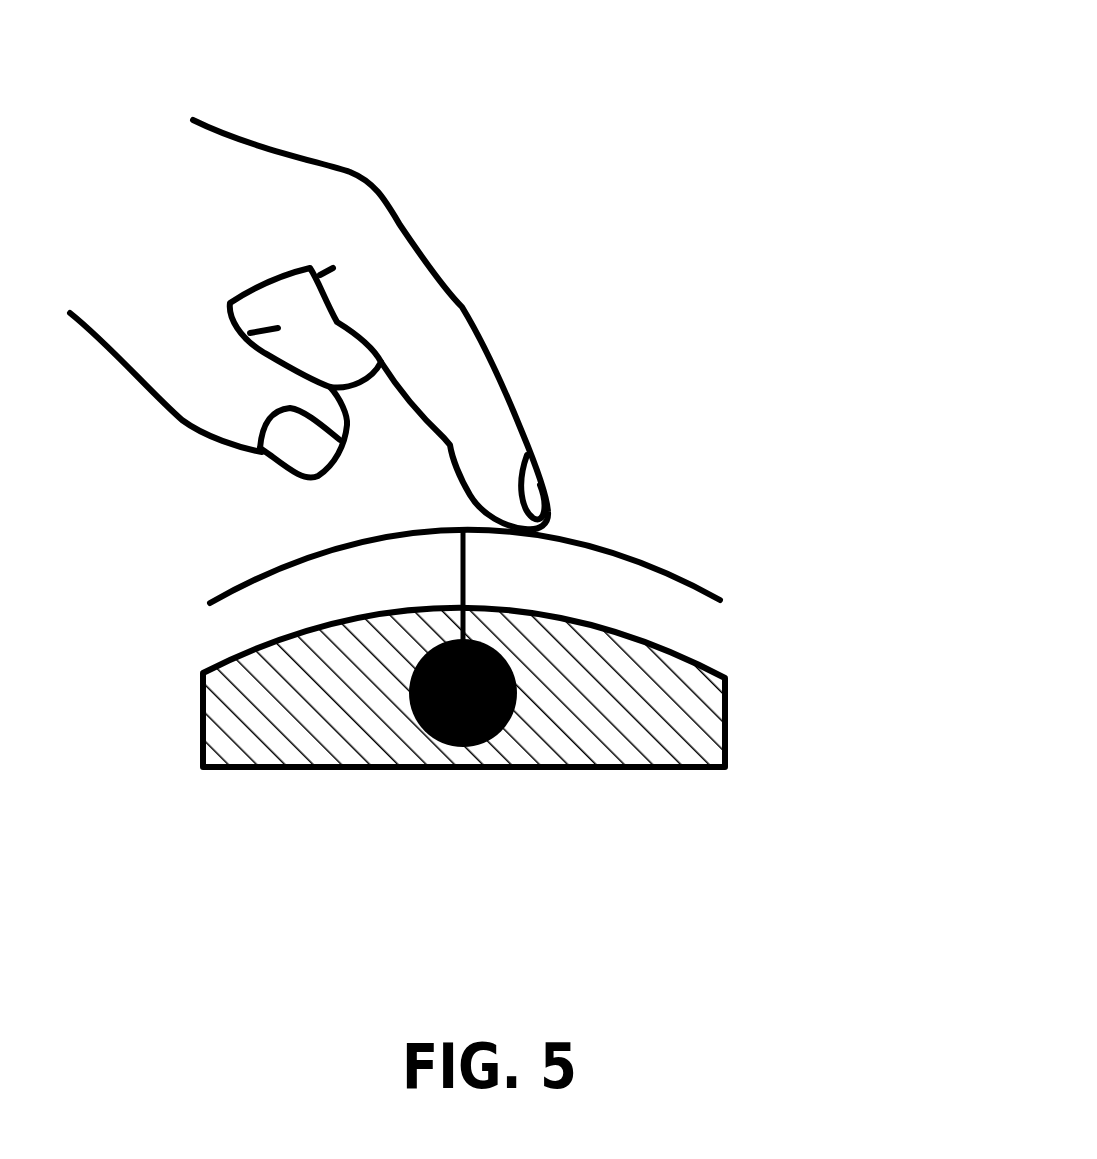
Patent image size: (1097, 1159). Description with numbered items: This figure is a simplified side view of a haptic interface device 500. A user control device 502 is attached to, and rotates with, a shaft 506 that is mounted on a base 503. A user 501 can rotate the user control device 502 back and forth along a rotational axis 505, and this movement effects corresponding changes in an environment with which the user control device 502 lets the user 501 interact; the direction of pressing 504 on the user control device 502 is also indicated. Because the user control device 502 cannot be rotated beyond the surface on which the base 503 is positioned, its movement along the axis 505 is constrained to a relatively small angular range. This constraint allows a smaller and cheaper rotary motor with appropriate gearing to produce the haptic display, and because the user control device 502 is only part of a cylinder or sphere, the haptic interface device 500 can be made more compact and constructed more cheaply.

The haptic interface device 500 is at (645, 68).
The user 501 is at (187, 420).
The user control device 502 is at (718, 600).
The base 503 is at (730, 713).
The pressing direction 504 is at (613, 400).
The rotational axis 505 is at (605, 508).
The shaft 506 is at (508, 718).